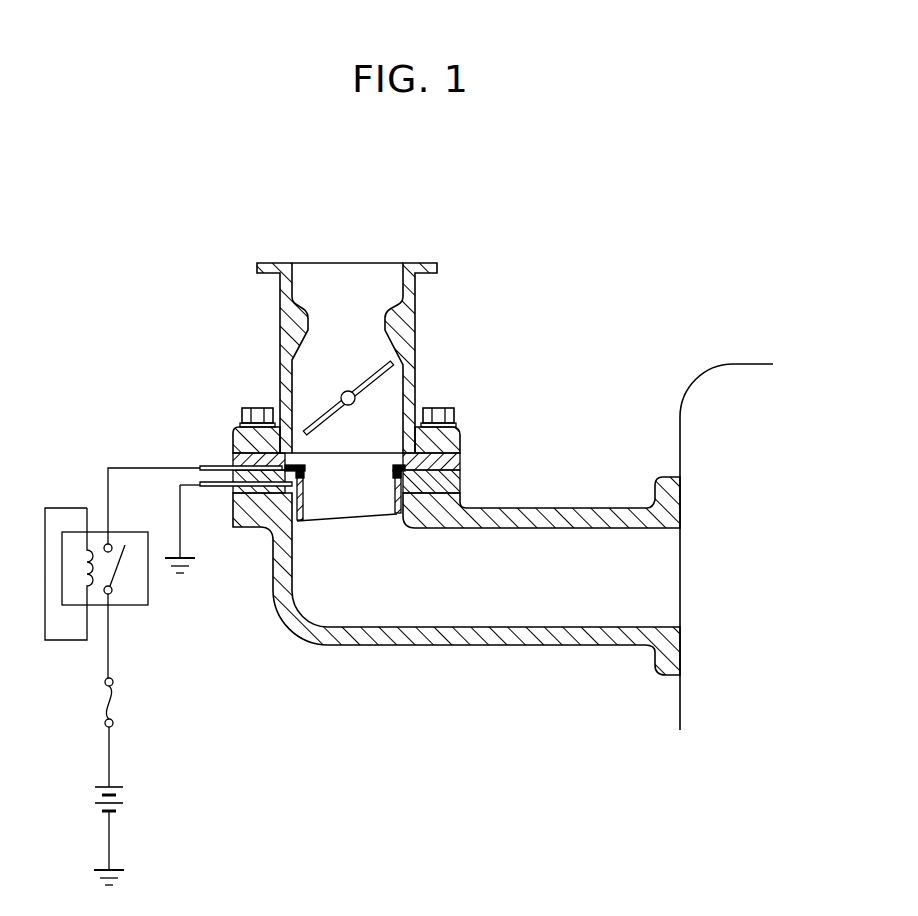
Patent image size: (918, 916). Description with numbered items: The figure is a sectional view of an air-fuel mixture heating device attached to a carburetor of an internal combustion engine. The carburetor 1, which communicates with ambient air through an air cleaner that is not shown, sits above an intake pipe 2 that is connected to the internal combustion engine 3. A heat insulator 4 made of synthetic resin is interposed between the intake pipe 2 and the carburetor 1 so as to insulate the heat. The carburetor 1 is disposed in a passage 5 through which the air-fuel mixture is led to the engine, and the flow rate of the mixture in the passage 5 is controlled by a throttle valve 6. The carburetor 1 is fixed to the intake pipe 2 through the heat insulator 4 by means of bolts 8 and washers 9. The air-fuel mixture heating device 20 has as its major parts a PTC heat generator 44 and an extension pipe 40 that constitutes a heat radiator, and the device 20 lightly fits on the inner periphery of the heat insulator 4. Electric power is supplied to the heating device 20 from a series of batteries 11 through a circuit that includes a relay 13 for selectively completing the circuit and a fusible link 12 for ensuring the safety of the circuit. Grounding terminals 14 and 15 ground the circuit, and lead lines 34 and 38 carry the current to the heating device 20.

The carburetor 1 is at (283, 264).
The intake pipe 2 is at (463, 642).
The internal combustion engine 3 is at (721, 553).
The heat insulator 4 is at (448, 458).
The passage 5 is at (352, 315).
The throttle valve 6 is at (383, 363).
The bolts 8 is at (446, 421).
The washers 9 is at (452, 428).
The batteries 11 is at (125, 797).
The fusible link 12 is at (120, 700).
The relay 13 is at (148, 593).
The grounding terminal 14 is at (128, 878).
The grounding terminal 15 is at (196, 565).
The air-fuel mixture heating device 20 is at (448, 487).
The lead line 34 is at (193, 488).
The lead line 38 is at (148, 465).
The extension pipe 40 is at (305, 520).
The PTC heat generator 44 is at (308, 477).